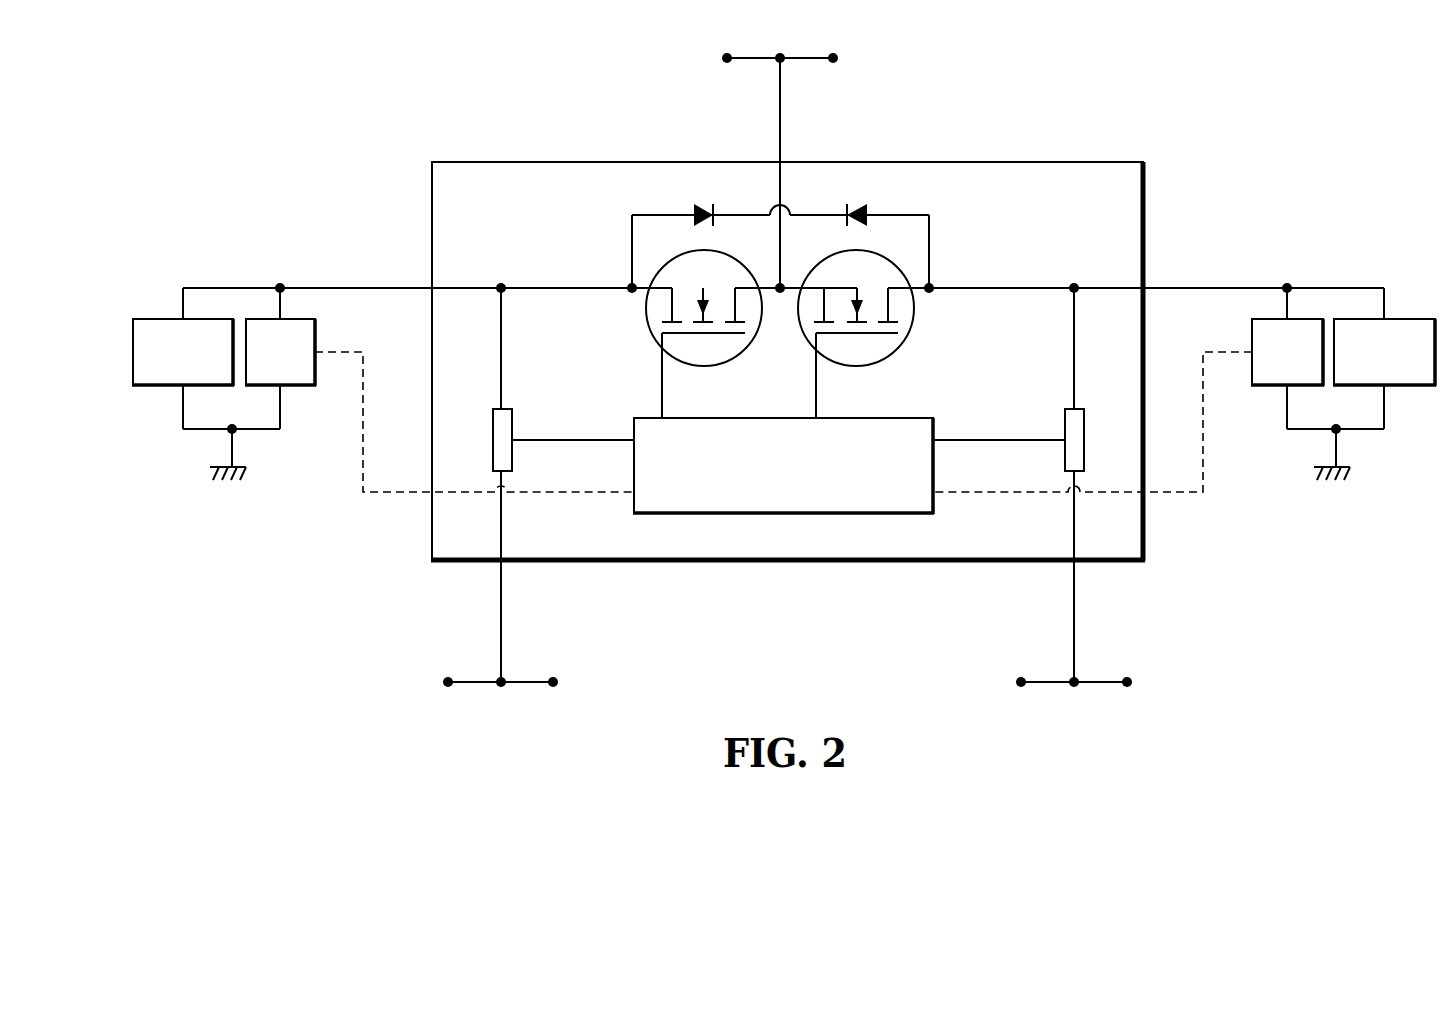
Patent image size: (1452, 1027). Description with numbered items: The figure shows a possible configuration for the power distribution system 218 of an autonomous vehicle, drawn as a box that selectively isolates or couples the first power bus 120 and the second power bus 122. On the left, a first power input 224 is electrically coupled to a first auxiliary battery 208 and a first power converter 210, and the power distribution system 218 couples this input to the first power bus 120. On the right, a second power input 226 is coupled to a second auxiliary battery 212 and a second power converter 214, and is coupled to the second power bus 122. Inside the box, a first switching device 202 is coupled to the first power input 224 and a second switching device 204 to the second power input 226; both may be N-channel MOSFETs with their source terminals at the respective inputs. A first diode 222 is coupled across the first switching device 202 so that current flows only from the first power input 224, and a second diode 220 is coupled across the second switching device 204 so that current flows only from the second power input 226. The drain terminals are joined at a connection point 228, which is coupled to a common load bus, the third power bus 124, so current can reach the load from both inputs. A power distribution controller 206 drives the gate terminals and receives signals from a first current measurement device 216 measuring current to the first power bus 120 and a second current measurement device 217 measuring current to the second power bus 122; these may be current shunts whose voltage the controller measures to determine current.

The first power bus 120 is at (478, 680).
The second power bus 122 is at (1097, 680).
The third power bus 124 is at (807, 57).
The first switching device 202 is at (644, 307).
The second switching device 204 is at (915, 307).
The power distribution controller 206 is at (864, 418).
The first auxiliary battery 208 is at (160, 386).
The first power converter 210 is at (297, 386).
The second auxiliary battery 212 is at (1410, 386).
The second power converter 214 is at (1273, 386).
The first current measurement device 216 is at (512, 425).
The second current measurement device 217 is at (1064, 425).
The power distribution system 218 is at (960, 161).
The second diode 220 is at (855, 204).
The first diode 222 is at (700, 204).
The first power input 224 is at (395, 287).
The second power input 226 is at (1156, 287).
The connection point 228 is at (778, 283).